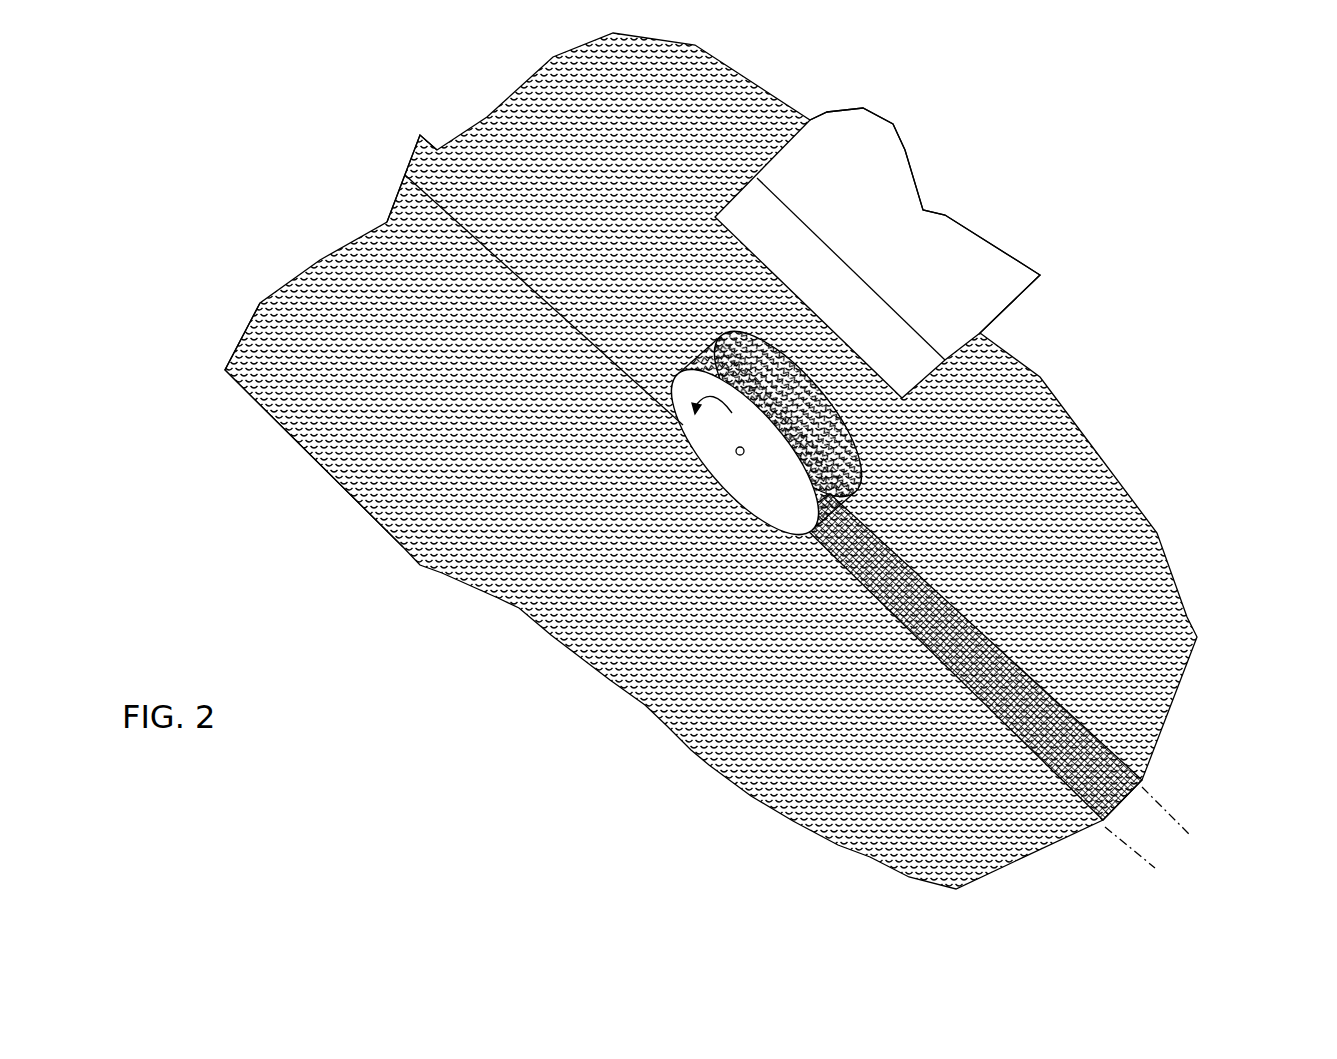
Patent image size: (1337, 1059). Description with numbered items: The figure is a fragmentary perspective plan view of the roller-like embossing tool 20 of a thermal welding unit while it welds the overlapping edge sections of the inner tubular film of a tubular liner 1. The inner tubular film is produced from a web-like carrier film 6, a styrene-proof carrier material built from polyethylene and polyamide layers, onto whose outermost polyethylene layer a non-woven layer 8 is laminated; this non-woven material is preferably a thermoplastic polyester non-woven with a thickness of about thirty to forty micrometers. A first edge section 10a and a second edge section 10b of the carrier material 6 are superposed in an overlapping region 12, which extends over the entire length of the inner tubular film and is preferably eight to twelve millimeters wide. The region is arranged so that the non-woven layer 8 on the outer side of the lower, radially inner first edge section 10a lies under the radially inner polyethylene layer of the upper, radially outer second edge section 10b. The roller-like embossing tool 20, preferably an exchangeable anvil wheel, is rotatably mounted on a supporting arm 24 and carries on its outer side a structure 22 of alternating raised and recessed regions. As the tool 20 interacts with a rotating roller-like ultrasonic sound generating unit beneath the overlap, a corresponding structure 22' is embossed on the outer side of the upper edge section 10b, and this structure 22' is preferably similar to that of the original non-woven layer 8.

The tubular liner 1 is at (1172, 527).
The web-like carrier film 6 is at (283, 423).
The non-woven layer 8 is at (271, 325).
The first edge section 10a is at (407, 137).
The second edge section 10b is at (425, 173).
The overlapping region 12 is at (1153, 803).
The roller-like embossing tool 20 is at (718, 430).
The structure 22 is at (591, 503).
The structure 22' is at (997, 621).
The supporting arm 24 is at (915, 387).